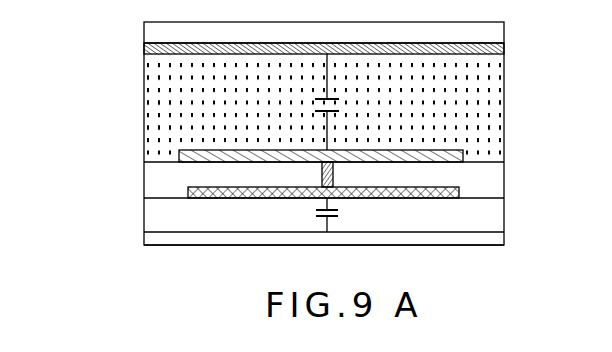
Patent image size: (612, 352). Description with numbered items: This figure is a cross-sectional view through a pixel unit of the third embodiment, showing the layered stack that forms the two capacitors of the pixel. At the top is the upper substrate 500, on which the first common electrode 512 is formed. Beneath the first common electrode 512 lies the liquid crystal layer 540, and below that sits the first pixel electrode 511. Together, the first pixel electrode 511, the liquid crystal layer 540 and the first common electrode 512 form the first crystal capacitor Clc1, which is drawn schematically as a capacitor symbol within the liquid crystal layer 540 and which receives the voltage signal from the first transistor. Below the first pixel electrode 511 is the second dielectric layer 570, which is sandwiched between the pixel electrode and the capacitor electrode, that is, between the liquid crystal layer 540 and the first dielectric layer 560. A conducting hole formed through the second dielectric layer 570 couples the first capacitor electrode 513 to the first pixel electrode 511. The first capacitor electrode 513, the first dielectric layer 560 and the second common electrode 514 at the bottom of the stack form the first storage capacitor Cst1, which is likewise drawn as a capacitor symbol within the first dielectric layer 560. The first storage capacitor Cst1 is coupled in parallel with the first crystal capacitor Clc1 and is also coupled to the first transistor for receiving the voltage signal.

The upper substrate 500 is at (500, 33).
The first common electrode 512 is at (144, 47).
The liquid crystal layer 540 is at (500, 100).
The first pixel electrode 511 is at (179, 151).
The second dielectric layer 570 is at (500, 176).
The first capacitor electrode 513 is at (188, 189).
The first dielectric layer 560 is at (500, 218).
The second common electrode 514 is at (144, 237).
The first crystal capacitor Clc1 is at (347, 102).
The first storage capacitor Cst1 is at (348, 215).